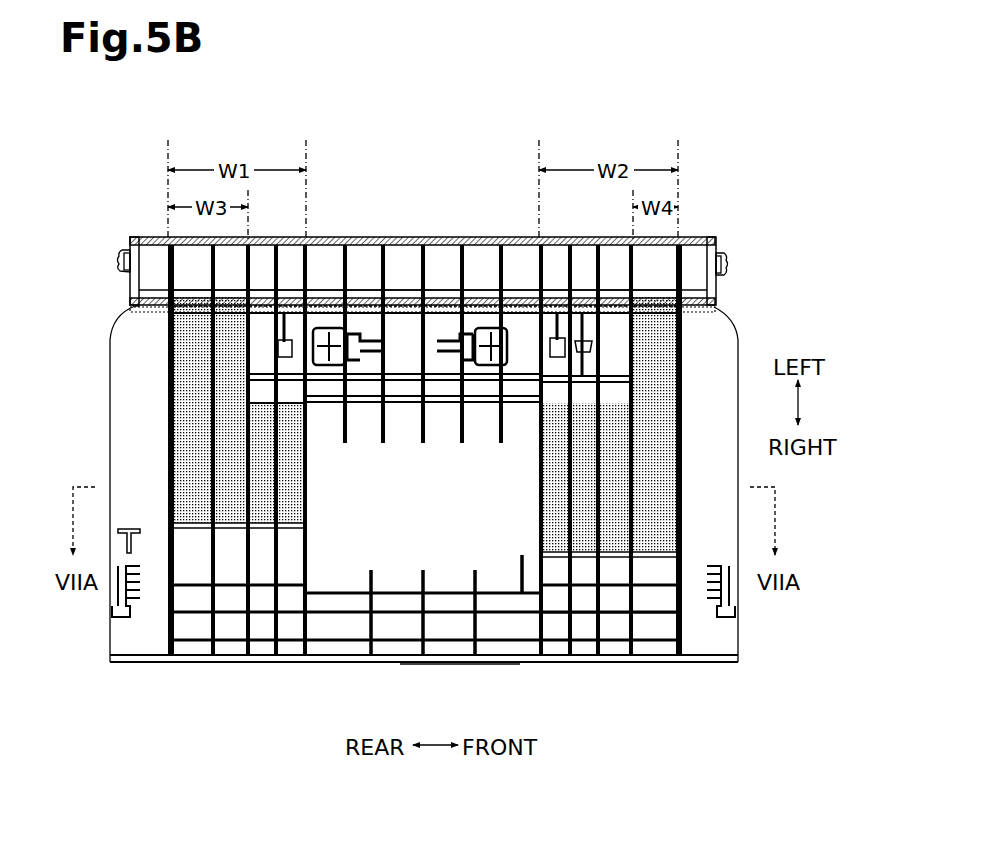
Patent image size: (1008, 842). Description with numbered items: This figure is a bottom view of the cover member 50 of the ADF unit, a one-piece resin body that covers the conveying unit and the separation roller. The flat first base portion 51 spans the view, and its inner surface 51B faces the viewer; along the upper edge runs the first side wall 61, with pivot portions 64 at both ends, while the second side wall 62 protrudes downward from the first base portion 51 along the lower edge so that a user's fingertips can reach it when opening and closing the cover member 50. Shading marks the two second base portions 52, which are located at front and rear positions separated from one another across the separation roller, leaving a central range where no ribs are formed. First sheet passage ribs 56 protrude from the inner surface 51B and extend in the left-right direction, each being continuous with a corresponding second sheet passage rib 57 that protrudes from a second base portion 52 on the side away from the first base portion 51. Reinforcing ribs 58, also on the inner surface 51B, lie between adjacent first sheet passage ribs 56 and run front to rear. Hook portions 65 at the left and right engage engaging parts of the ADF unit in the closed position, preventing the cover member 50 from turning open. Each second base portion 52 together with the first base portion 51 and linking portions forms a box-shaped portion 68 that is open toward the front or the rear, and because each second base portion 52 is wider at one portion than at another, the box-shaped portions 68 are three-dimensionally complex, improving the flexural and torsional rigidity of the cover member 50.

The cover member 50 is at (472, 207).
The first base portion 51 is at (145, 390).
The inner surface 51B is at (340, 576).
The second base portion 52 is at (197, 500).
The first sheet passage rib 56 is at (277, 548).
The second sheet passage rib 57 is at (295, 492).
The reinforcing rib 58 is at (617, 613).
The first side wall 61 is at (415, 238).
The second side wall 62 is at (490, 664).
The pivot portion 64 is at (120, 262).
The hook portion 65 is at (118, 600).
The box-shaped portion 68 is at (265, 536).